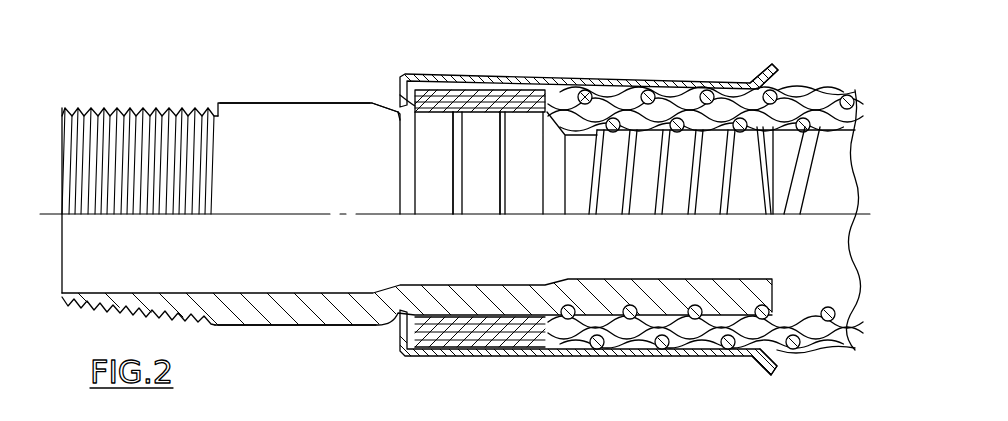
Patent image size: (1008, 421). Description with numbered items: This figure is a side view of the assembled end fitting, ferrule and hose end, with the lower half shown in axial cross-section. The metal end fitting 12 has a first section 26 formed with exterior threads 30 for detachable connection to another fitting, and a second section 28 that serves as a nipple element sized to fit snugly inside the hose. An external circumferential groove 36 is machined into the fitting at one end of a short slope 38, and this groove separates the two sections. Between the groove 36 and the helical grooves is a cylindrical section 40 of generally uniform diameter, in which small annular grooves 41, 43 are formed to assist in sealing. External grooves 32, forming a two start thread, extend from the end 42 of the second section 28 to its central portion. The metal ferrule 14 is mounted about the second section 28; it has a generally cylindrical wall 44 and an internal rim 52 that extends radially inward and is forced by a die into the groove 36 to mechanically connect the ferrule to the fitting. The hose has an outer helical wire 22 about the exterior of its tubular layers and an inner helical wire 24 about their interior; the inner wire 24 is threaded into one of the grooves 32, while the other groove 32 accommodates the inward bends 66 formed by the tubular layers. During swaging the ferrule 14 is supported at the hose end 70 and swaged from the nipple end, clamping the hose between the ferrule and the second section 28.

The end fitting 12 is at (250, 113).
The metal ferrule 14 is at (635, 78).
The outer helical wire 22 is at (596, 352).
The inner helical wire 24 is at (776, 312).
The first section 26 is at (308, 104).
The second section 28 is at (528, 128).
The exterior threads 30 is at (116, 109).
The external grooves 32 is at (715, 190).
The circumferential groove 36 is at (400, 120).
The short slope 38 is at (385, 113).
The cylindrical section 40 is at (415, 220).
The annular groove 41 is at (455, 177).
The end of second section 42 is at (773, 182).
The annular groove 43 is at (500, 189).
The cylindrical wall 44 is at (470, 77).
The internal rim 52 is at (400, 93).
The inward bends 66 is at (670, 300).
The hose end 70 is at (773, 73).